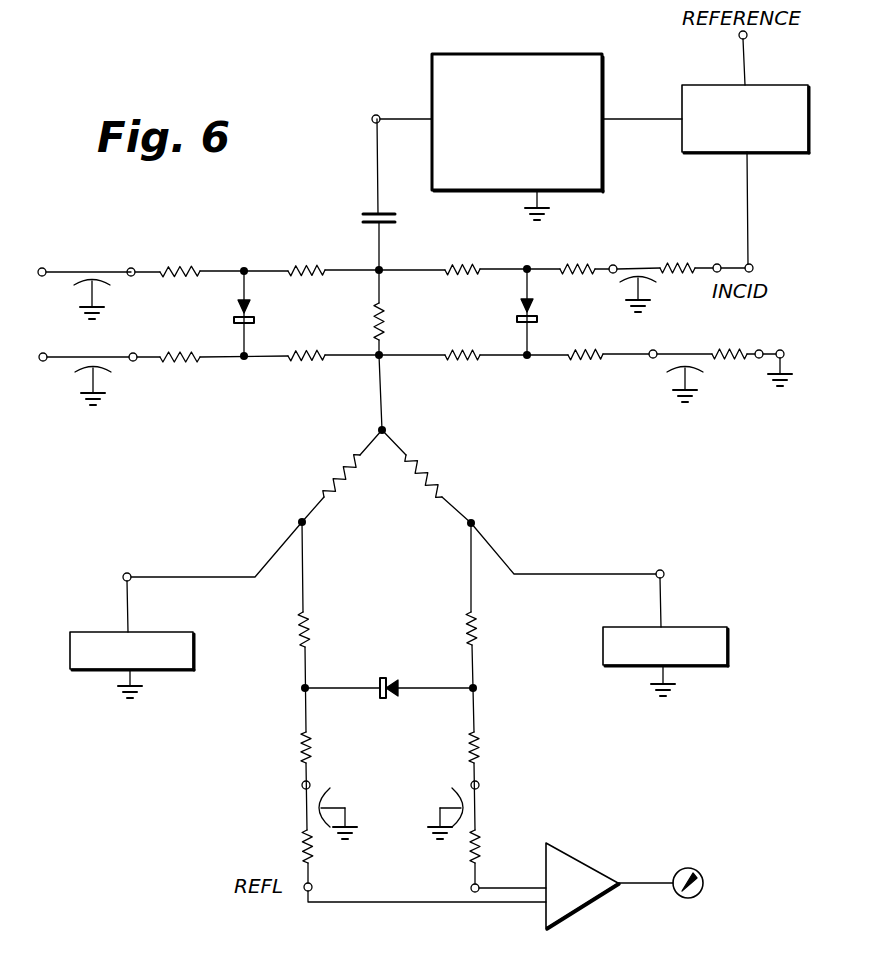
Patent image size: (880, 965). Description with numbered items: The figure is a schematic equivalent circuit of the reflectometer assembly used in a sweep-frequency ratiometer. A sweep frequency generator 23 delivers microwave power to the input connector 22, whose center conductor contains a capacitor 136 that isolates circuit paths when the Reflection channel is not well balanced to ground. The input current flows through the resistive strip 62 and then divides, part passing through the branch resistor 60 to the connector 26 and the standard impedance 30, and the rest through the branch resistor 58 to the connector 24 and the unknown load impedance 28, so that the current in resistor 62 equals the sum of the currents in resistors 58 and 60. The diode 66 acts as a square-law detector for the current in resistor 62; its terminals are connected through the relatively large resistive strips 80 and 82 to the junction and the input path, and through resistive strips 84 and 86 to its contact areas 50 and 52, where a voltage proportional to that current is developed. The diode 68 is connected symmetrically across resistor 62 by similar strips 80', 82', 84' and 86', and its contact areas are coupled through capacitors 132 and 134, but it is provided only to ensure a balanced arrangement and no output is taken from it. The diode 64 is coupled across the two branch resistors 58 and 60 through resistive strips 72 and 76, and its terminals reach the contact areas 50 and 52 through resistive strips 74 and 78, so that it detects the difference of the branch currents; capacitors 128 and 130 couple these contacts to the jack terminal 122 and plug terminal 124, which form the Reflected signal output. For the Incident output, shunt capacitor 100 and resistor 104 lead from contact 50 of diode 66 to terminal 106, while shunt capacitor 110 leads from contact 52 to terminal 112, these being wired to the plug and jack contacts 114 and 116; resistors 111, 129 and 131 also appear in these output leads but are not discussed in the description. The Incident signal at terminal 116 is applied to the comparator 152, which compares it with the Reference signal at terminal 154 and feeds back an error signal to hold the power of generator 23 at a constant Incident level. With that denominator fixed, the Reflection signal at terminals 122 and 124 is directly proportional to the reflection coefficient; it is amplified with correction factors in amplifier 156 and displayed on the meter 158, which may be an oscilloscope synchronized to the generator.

The coaxial connector 22 is at (372, 119).
The generator 23 is at (603, 170).
The coaxial connector 24 is at (127, 573).
The coaxial connector 26 is at (664, 571).
The unknown load impedance 28 is at (196, 634).
The standard impedance 30 is at (709, 628).
The contact area 50 is at (131, 268).
The contact area 52 is at (133, 353).
The resistive strip 58 is at (337, 473).
The resistive strip 60 is at (432, 470).
The resistive strip 62 is at (385, 322).
The diode 64 is at (398, 681).
The diode 66 is at (520, 304).
The diode 68 is at (253, 303).
The resistive deposition strip 72 is at (312, 630).
The resistive deposition strip 74 is at (314, 745).
The resistive strip 76 is at (480, 628).
The resistive strip 78 is at (481, 745).
The resistive strip 80 is at (470, 369).
The resistive strip 80' is at (315, 370).
The resistive strip 82 is at (471, 252).
The resistive strip 82' is at (312, 252).
The resistive strip 84 is at (591, 368).
The resistive strip 84' is at (180, 253).
The resistive strip 86 is at (575, 249).
The resistive strip 86' is at (185, 372).
The shunt capacitor 100 is at (628, 283).
The resistor 104 is at (680, 264).
The terminal 106 is at (715, 273).
The shunt capacitor 110 is at (672, 382).
The resistor 111 is at (728, 348).
The terminal 112 is at (758, 350).
The plug contact 114 is at (752, 265).
The jack contact 116 is at (783, 351).
The jack terminal 122 is at (471, 888).
The plug terminal 124 is at (312, 887).
The capacitor 128 is at (332, 796).
The resistor 129 is at (302, 848).
The capacitor 130 is at (458, 792).
The resistor 131 is at (482, 848).
The capacitor 132 is at (80, 290).
The capacitor 134 is at (82, 376).
The capacitor 136 is at (365, 214).
The comparator 152 is at (727, 85).
The reference signal terminal 154 is at (748, 37).
The amplifier 156 is at (582, 866).
The meter 158 is at (700, 870).